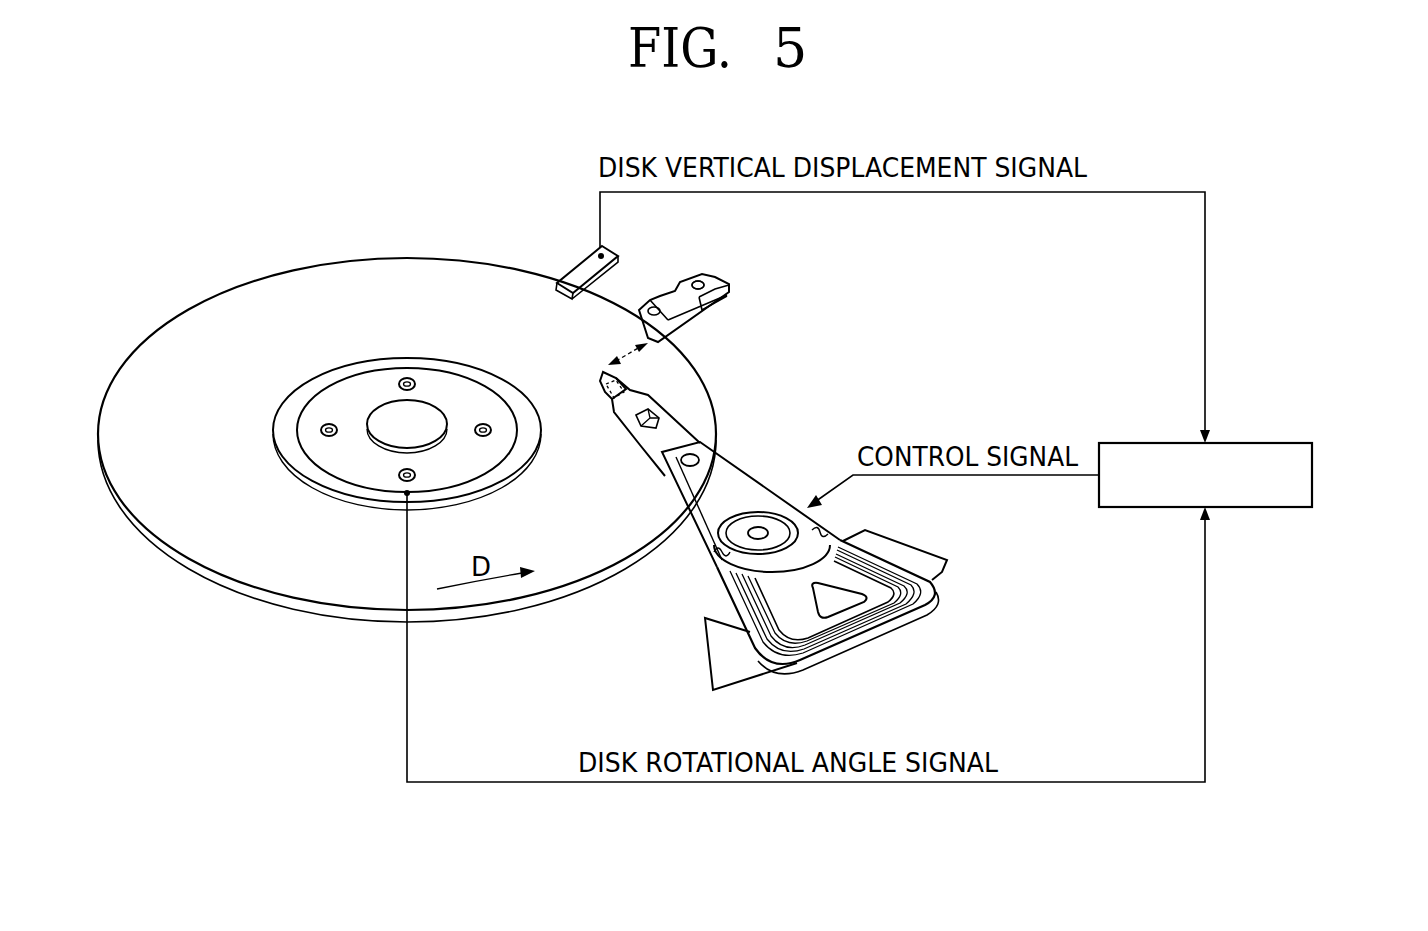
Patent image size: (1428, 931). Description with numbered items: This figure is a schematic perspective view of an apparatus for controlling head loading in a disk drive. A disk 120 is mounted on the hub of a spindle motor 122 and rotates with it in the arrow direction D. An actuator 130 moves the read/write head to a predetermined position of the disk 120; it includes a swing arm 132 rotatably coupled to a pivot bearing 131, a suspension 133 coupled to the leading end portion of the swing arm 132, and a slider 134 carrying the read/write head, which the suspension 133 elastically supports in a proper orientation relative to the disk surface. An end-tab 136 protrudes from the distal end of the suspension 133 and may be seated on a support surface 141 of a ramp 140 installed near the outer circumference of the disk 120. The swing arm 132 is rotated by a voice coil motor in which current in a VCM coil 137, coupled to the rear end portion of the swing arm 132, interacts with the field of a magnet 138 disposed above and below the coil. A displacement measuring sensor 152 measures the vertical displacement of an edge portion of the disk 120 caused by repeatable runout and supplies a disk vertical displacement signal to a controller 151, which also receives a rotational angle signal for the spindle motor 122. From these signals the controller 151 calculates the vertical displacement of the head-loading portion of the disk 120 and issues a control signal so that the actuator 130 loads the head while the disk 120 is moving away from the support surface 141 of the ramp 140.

The disk 120 is at (270, 297).
The spindle motor 122 is at (332, 462).
The actuator 130 is at (690, 580).
The pivot bearing 131 is at (760, 531).
The swing arm 132 is at (733, 465).
The suspension 133 is at (668, 433).
The slider 134 is at (608, 392).
The end-tab 136 is at (603, 372).
The VCM coil 137 is at (857, 633).
The magnet 138 is at (722, 650).
The ramp 140 is at (722, 300).
The support surface 141 is at (673, 312).
The controller 151 is at (1313, 475).
The displacement measuring sensor 152 is at (572, 254).